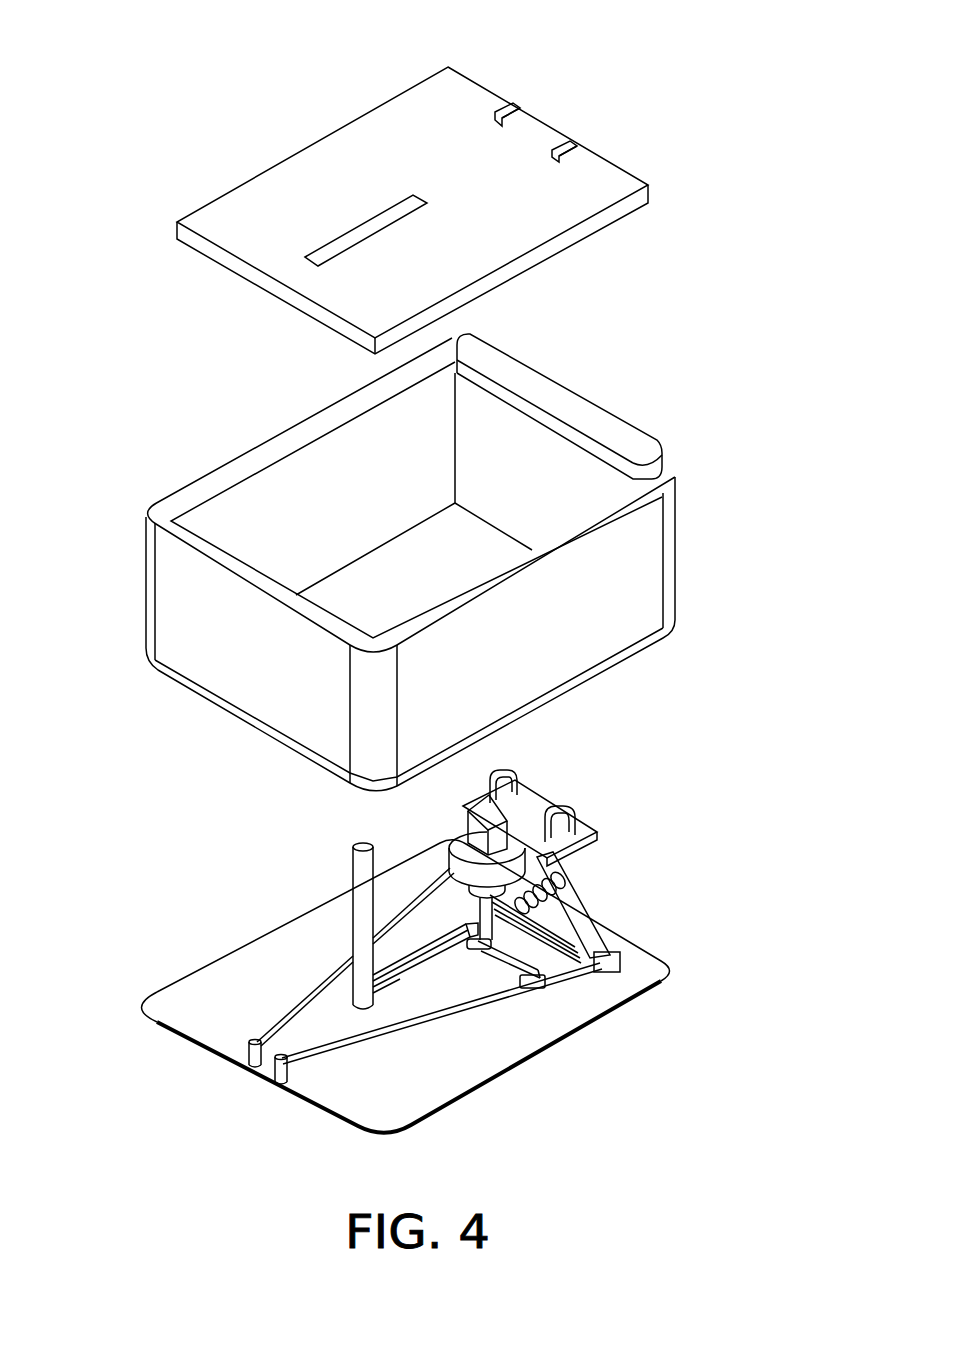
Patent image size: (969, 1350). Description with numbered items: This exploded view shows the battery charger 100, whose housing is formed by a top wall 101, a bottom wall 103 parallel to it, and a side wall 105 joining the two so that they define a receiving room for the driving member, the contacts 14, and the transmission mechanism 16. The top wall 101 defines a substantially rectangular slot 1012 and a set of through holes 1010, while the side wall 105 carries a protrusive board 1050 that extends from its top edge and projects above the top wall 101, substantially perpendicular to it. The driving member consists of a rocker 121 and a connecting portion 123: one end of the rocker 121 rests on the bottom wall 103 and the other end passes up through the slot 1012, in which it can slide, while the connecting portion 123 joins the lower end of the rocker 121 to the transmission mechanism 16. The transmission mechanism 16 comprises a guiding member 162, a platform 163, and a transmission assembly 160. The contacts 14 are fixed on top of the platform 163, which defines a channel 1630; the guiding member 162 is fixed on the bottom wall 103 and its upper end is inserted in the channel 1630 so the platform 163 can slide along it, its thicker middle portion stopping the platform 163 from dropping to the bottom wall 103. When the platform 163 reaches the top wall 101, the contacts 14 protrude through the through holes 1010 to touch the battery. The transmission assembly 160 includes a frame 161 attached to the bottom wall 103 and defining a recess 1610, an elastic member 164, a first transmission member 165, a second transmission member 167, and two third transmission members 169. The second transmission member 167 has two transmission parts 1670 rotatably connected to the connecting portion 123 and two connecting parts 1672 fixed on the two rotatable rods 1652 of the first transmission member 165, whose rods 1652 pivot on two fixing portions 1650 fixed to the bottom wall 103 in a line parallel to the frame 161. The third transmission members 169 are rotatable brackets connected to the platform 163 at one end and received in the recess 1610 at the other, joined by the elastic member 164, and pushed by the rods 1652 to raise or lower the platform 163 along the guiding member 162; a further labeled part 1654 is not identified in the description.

The battery charger 100 is at (186, 64).
The top wall 101 is at (250, 203).
The through holes 1010 is at (503, 107).
The slot 1012 is at (338, 247).
The side wall 105 is at (175, 600).
The protrusive board 1050 is at (545, 385).
The bottom wall 103 is at (232, 972).
The rocker 121 is at (362, 900).
The connecting portion 123 is at (395, 982).
The transmission mechanism 16 is at (610, 780).
The contacts 14 is at (582, 822).
The platform 163 is at (530, 800).
The channel 1630 is at (448, 842).
The elastic member 164 is at (553, 870).
The third transmission members 169 is at (580, 903).
The frame 161 is at (641, 947).
The recess 1610 is at (613, 978).
The guide rail 1654 is at (615, 970).
The guiding member 162 is at (587, 975).
The second transmission member 167 is at (449, 1059).
The transmission parts 1670 is at (497, 955).
The connecting parts 1672 is at (548, 990).
The first transmission member 165 is at (254, 1027).
The transmission assembly 160 is at (287, 1023).
The fixing portions 1650 is at (283, 1063).
The rotatable rods 1652 is at (307, 1063).